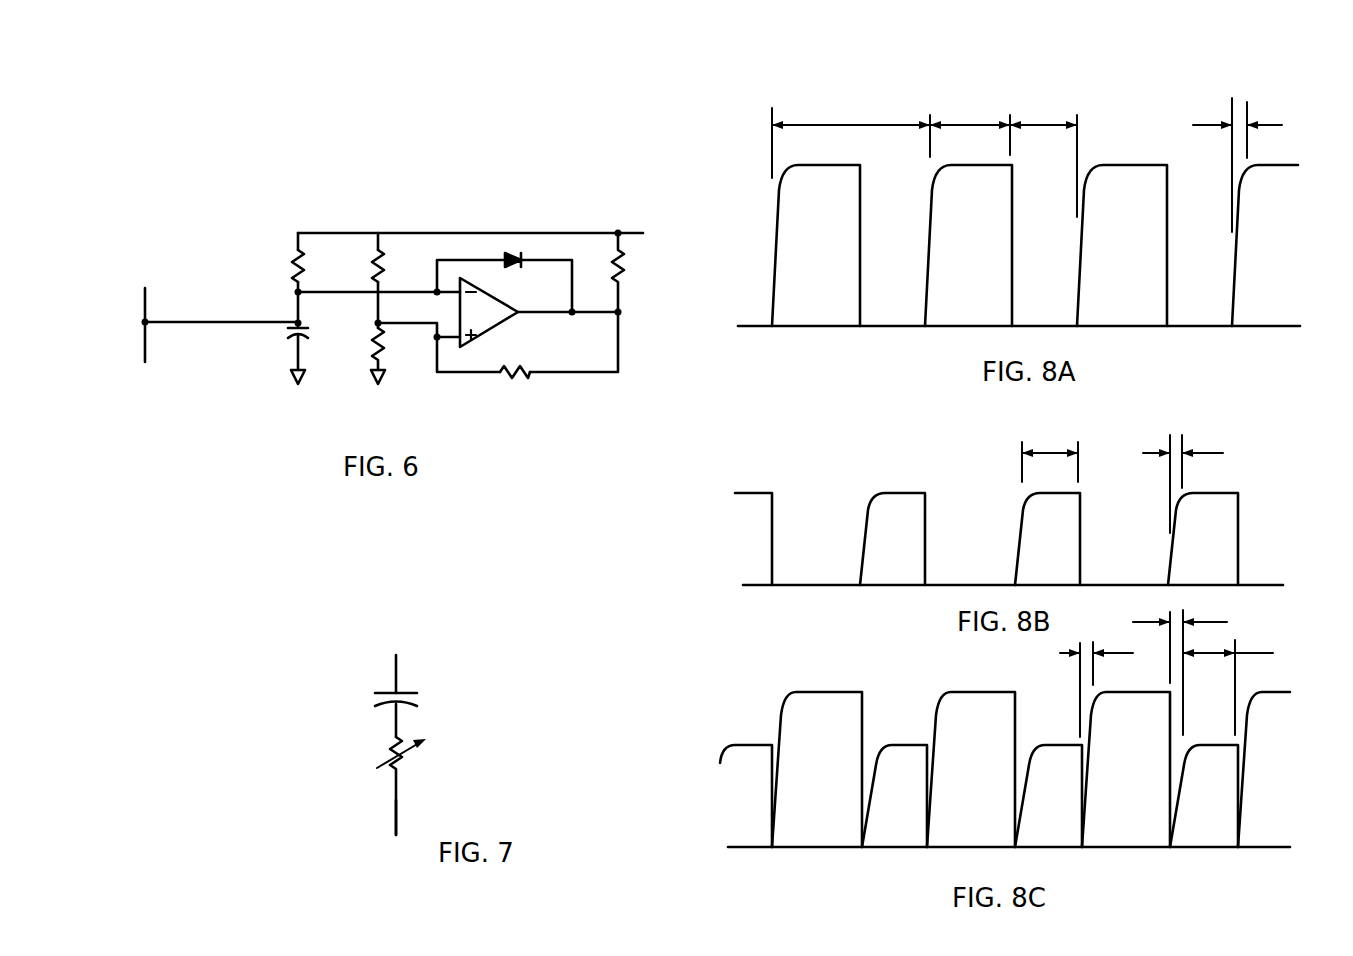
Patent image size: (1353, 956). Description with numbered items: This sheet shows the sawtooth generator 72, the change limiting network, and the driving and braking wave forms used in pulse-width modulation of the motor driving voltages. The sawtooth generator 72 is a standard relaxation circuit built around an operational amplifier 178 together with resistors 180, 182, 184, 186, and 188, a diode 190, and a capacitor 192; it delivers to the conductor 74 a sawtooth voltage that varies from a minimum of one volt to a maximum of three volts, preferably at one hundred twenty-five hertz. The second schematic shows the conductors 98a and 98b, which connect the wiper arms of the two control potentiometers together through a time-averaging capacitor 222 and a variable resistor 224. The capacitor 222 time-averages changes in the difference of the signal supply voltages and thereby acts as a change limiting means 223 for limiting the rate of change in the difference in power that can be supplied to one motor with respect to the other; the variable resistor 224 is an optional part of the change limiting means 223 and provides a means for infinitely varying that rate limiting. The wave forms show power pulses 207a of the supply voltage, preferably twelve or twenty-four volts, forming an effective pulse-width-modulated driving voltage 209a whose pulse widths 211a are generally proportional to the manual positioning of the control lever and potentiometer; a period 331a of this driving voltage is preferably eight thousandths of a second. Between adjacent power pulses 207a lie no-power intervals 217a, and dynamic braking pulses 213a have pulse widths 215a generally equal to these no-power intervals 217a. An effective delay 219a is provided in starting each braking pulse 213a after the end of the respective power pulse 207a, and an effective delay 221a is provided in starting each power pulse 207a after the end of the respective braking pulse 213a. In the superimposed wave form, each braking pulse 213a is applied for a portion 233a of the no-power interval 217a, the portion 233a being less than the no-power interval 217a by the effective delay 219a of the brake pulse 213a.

In FIG. 6, the sawtooth generator 72 is at (196, 406).
In FIG. 6, the conductor 74 is at (144, 308).
In FIG. 6, the operational amplifier 178 is at (497, 326).
In FIG. 6, the resistor 180 is at (517, 376).
In FIG. 6, the resistor 182 is at (621, 262).
In FIG. 6, the resistor 184 is at (379, 245).
In FIG. 6, the resistor 186 is at (374, 350).
In FIG. 6, the resistor 188 is at (296, 262).
In FIG. 6, the diode 190 is at (513, 258).
In FIG. 6, the capacitor 192 is at (294, 341).
In FIG. 7, the conductor 98a is at (396, 820).
In FIG. 7, the conductor 98b is at (395, 668).
In FIG. 7, the time-averaging capacitor 222 is at (408, 688).
In FIG. 7, the change limiting means 223 is at (305, 764).
In FIG. 7, the variable resistor 224 is at (408, 766).
In FIG. 8A, the power pulses 207a is at (779, 192).
In FIG. 8C, the power pulses 207a is at (842, 692).
In FIG. 8A, the pulse-width-modulated driving voltage 209a is at (690, 141).
In FIG. 8A, the pulse widths 211a is at (966, 125).
In FIG. 8B, the dynamic braking pulses 213a is at (895, 494).
In FIG. 8C, the dynamic braking pulses 213a is at (900, 745).
In FIG. 8B, the pulse widths 215a is at (1082, 416).
In FIG. 8A, the no-power intervals 217a is at (1066, 84).
In FIG. 8B, the effective delay 219a is at (1224, 416).
In FIG. 8C, the effective delay 219a is at (1205, 622).
In FIG. 8A, the effective delay 221a is at (1214, 85).
In FIG. 8C, the effective delay 221a is at (1062, 653).
In FIG. 8C, the portion 233a is at (1250, 653).
In FIG. 8A, the period 331a is at (821, 125).